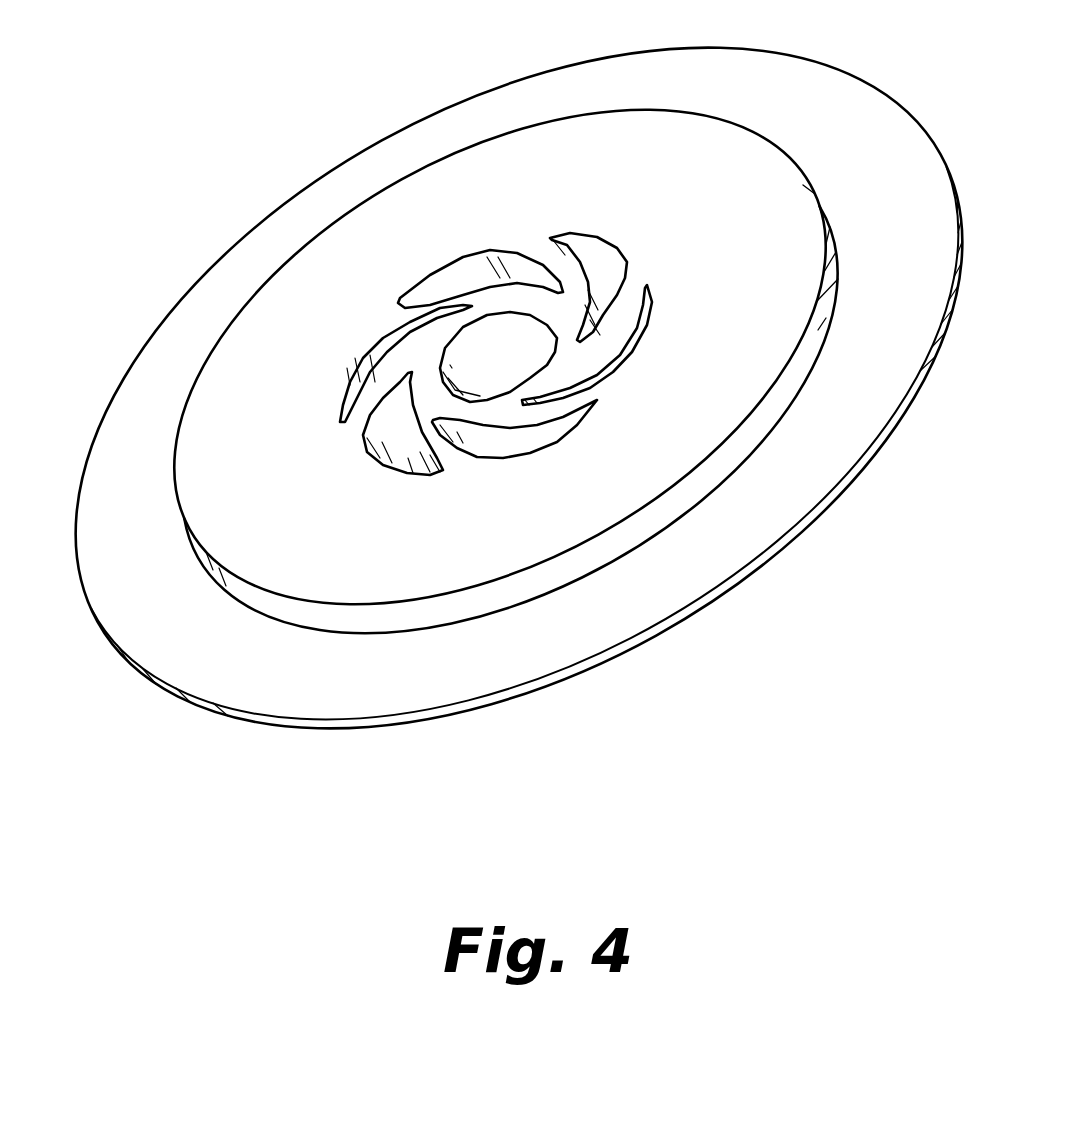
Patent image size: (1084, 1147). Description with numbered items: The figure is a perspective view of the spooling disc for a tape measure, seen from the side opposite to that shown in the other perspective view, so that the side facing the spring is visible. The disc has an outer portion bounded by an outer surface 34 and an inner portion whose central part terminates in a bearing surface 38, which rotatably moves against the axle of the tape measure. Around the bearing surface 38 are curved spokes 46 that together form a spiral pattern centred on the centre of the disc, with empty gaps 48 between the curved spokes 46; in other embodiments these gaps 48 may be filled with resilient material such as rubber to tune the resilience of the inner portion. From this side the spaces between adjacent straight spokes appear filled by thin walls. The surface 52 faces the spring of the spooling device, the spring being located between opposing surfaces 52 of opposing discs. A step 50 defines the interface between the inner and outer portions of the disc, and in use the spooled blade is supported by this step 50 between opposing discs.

The outer surface 34 is at (738, 577).
The bearing surface 38 is at (514, 337).
The curved spokes 46 is at (372, 395).
The gaps 48 is at (370, 455).
The step 50 is at (455, 607).
The surface 52 is at (761, 273).